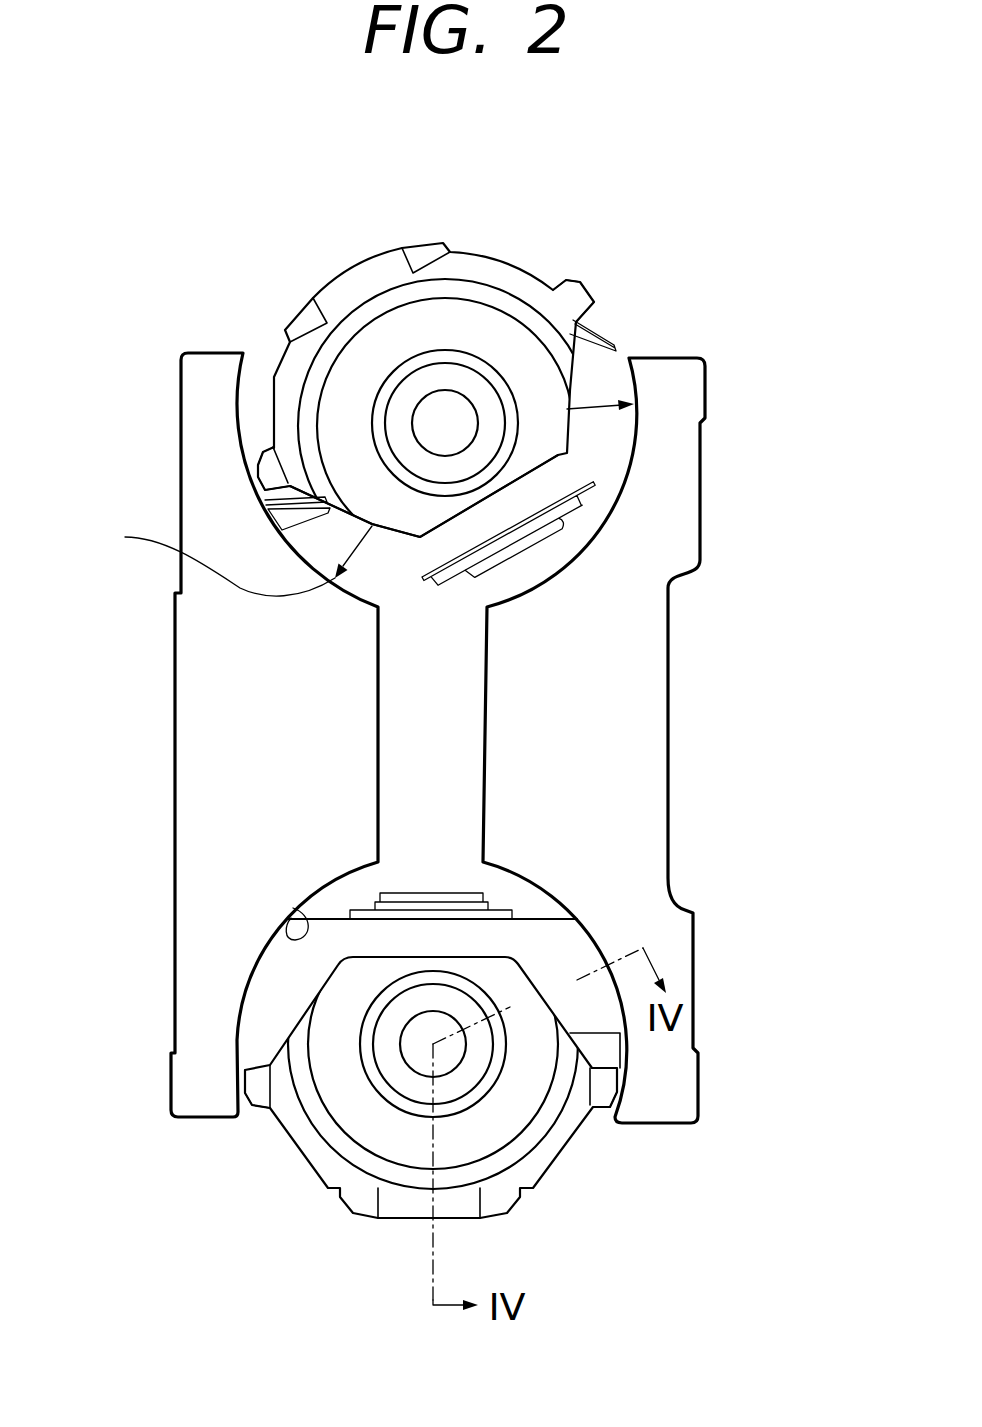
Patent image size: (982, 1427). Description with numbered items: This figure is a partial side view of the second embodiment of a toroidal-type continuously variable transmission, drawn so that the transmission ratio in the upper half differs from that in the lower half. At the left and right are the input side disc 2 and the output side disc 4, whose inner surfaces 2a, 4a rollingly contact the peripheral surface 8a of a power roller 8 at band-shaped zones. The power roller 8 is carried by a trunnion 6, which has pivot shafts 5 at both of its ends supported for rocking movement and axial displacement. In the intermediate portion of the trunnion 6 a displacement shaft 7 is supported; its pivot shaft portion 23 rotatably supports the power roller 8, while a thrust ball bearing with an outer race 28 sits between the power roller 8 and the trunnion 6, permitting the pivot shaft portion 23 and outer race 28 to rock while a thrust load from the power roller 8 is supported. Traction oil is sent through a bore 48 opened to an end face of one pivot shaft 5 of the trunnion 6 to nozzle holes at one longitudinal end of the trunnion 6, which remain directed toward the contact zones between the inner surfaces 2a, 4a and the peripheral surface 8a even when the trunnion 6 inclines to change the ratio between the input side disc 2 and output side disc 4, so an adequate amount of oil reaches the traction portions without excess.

The input side disc 2 is at (203, 365).
The inner surface of input side disc 2a is at (293, 908).
The output side disc 4 is at (693, 380).
The inner surface of output side disc 4a is at (562, 543).
The pivot shaft 5 is at (490, 362).
The trunnion 6 is at (462, 258).
The displacement shaft 7 is at (503, 558).
The power roller 8 is at (613, 363).
The peripheral surface of power roller 8a is at (262, 960).
The pivot shaft portion 23 is at (560, 512).
The outer race 28 is at (570, 292).
The bore 48 is at (442, 392).